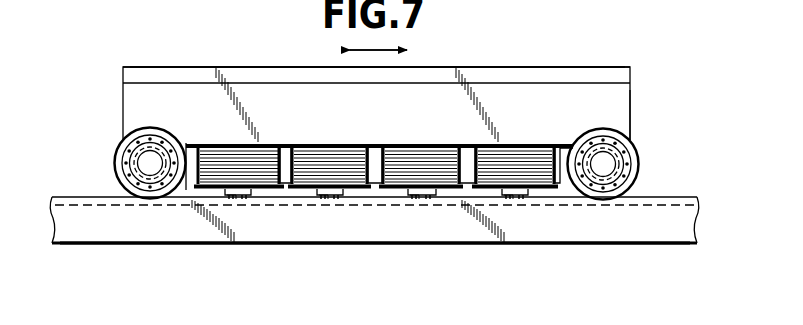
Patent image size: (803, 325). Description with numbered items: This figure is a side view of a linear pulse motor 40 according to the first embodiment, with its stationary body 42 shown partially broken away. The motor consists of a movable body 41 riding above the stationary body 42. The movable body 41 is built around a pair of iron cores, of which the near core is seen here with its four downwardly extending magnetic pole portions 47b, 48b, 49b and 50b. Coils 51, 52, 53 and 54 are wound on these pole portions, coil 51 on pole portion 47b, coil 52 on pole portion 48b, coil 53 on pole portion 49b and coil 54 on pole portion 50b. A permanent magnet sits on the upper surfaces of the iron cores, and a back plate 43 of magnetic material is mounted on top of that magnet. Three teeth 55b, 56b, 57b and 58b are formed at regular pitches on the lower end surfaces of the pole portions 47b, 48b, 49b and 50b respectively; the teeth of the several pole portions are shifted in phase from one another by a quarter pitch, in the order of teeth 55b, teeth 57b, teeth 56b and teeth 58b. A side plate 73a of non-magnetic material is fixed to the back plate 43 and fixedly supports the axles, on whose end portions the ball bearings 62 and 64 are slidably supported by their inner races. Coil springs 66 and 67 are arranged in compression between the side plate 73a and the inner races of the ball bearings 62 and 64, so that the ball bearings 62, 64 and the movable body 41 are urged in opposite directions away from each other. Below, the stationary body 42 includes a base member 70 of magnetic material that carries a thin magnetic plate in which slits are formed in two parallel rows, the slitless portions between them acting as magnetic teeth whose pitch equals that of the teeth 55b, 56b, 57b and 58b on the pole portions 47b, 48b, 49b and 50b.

The linear pulse motor 40 is at (238, 53).
The movable body 41 is at (277, 100).
The stationary body 42 is at (598, 224).
The back plate 43 is at (490, 78).
The magnetic pole portion 47b is at (250, 193).
The magnetic pole portion 48b is at (345, 193).
The magnetic pole portion 49b is at (438, 193).
The magnetic pole portion 50b is at (530, 193).
The coil 51 is at (240, 150).
The coil 52 is at (318, 151).
The coil 53 is at (420, 151).
The coil 54 is at (526, 150).
The teeth 55b is at (231, 200).
The teeth 56b is at (323, 200).
The teeth 57b is at (417, 200).
The teeth 58b is at (507, 200).
The ball bearing 62 is at (119, 172).
The ball bearing 64 is at (634, 180).
The coil spring 66 is at (121, 150).
The coil spring 67 is at (633, 156).
The base member 70 is at (153, 230).
The side plate 73a is at (614, 113).